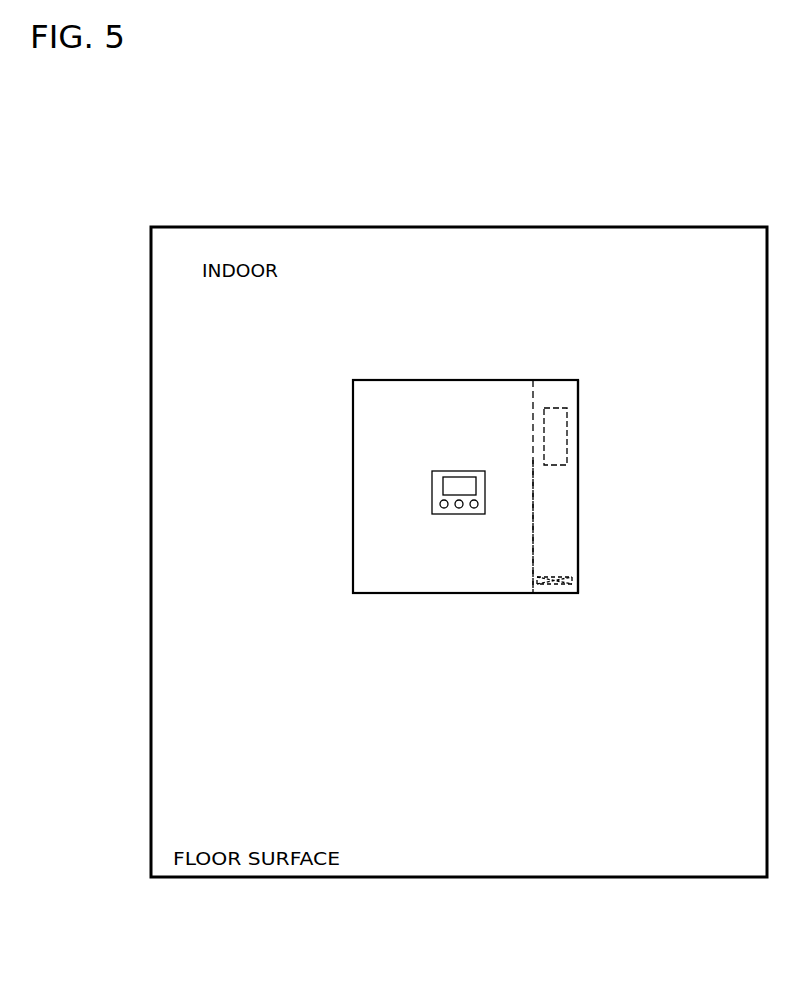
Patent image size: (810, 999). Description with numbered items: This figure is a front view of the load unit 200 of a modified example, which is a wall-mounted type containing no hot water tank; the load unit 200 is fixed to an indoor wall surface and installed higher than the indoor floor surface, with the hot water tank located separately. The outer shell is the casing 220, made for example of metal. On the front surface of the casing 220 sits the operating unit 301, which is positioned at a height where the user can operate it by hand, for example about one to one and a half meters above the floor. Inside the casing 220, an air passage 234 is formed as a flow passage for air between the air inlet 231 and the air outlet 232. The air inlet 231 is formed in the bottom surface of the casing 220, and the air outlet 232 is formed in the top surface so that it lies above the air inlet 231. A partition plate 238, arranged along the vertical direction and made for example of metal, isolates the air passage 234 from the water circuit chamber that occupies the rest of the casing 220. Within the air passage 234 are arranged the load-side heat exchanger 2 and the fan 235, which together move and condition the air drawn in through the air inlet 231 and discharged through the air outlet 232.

The load unit 200 is at (460, 380).
The air outlet 232 is at (553, 380).
The load-side heat exchanger 2 is at (567, 425).
The casing 220 is at (578, 458).
The air passage 234 is at (563, 545).
The fan 235 is at (572, 580).
The partition plate 238 is at (532, 530).
The air inlet 231 is at (551, 594).
The operating unit 301 is at (433, 498).